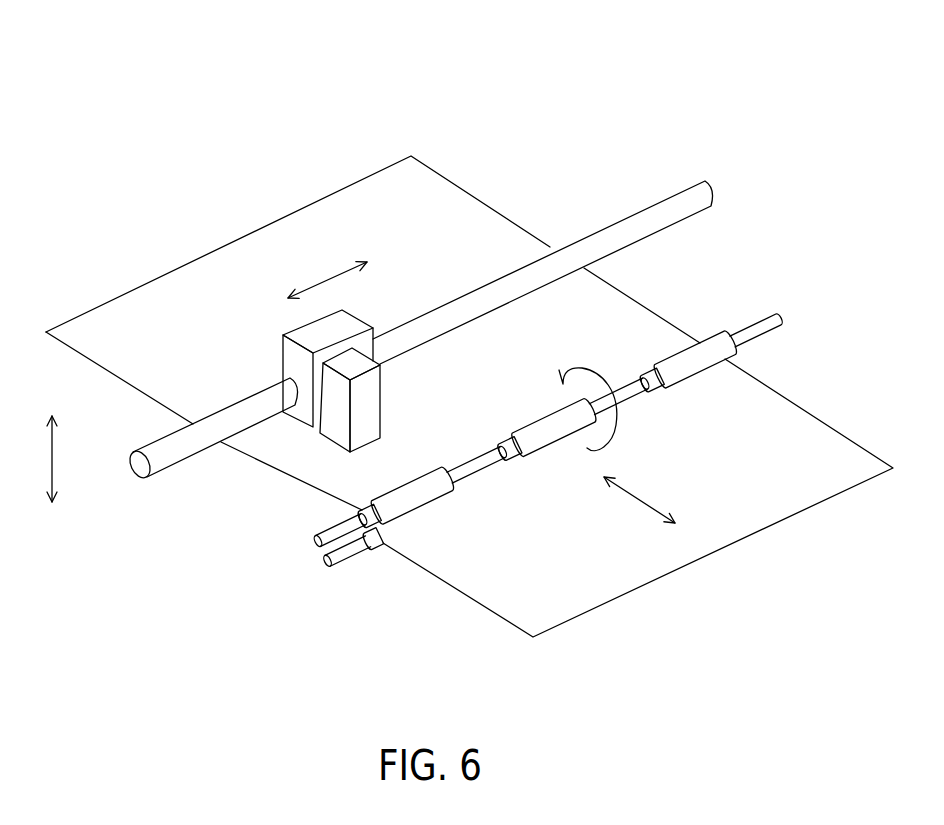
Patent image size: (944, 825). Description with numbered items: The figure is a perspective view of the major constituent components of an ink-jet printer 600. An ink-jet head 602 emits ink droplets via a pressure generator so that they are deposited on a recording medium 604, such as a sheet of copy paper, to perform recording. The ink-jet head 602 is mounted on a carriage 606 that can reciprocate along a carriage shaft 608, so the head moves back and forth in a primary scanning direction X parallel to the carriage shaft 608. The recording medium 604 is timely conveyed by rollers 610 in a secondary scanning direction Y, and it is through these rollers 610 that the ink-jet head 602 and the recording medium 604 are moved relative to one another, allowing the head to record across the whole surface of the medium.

The ink-jet printer 600 is at (506, 82).
The ink-jet head 602 is at (374, 399).
The recording medium 604 is at (809, 428).
The carriage 606 is at (347, 322).
The carriage shaft 608 is at (623, 216).
The rollers 610 is at (700, 357).